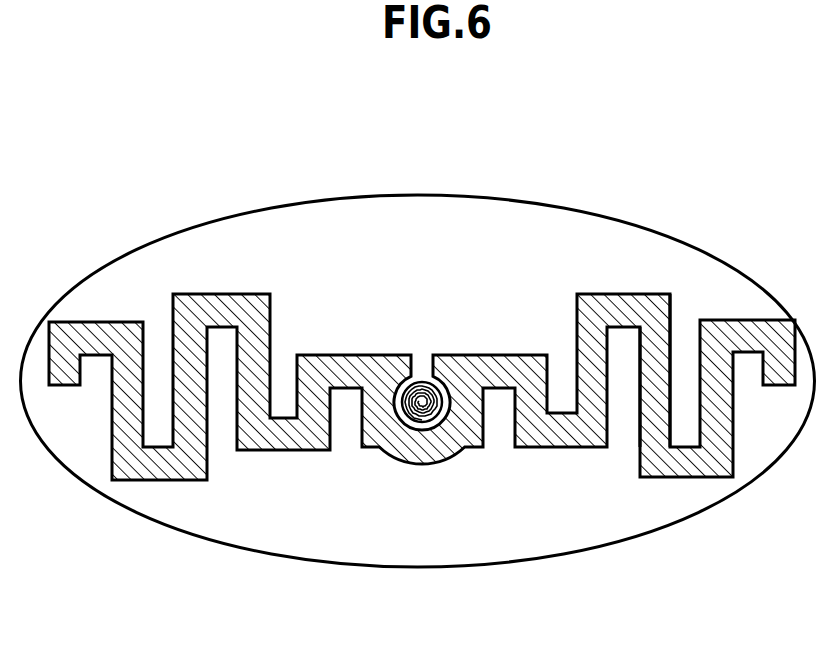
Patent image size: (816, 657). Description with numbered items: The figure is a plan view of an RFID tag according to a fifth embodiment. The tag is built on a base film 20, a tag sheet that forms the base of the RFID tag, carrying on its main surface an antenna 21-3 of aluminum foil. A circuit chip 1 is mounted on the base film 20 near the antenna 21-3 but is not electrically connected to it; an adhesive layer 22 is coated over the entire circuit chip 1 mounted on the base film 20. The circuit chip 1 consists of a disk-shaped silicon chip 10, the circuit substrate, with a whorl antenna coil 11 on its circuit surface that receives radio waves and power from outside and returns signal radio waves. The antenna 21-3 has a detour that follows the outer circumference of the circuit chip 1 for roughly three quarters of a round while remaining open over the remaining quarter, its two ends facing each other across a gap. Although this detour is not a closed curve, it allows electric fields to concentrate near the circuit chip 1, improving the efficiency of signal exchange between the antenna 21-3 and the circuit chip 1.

The circuit chip 1 is at (434, 259).
The silicon chip 10 is at (363, 440).
The antenna coil 11 is at (422, 373).
The base film 20 is at (497, 530).
The antenna 21-3 is at (640, 407).
The adhesive layer 22 is at (300, 447).